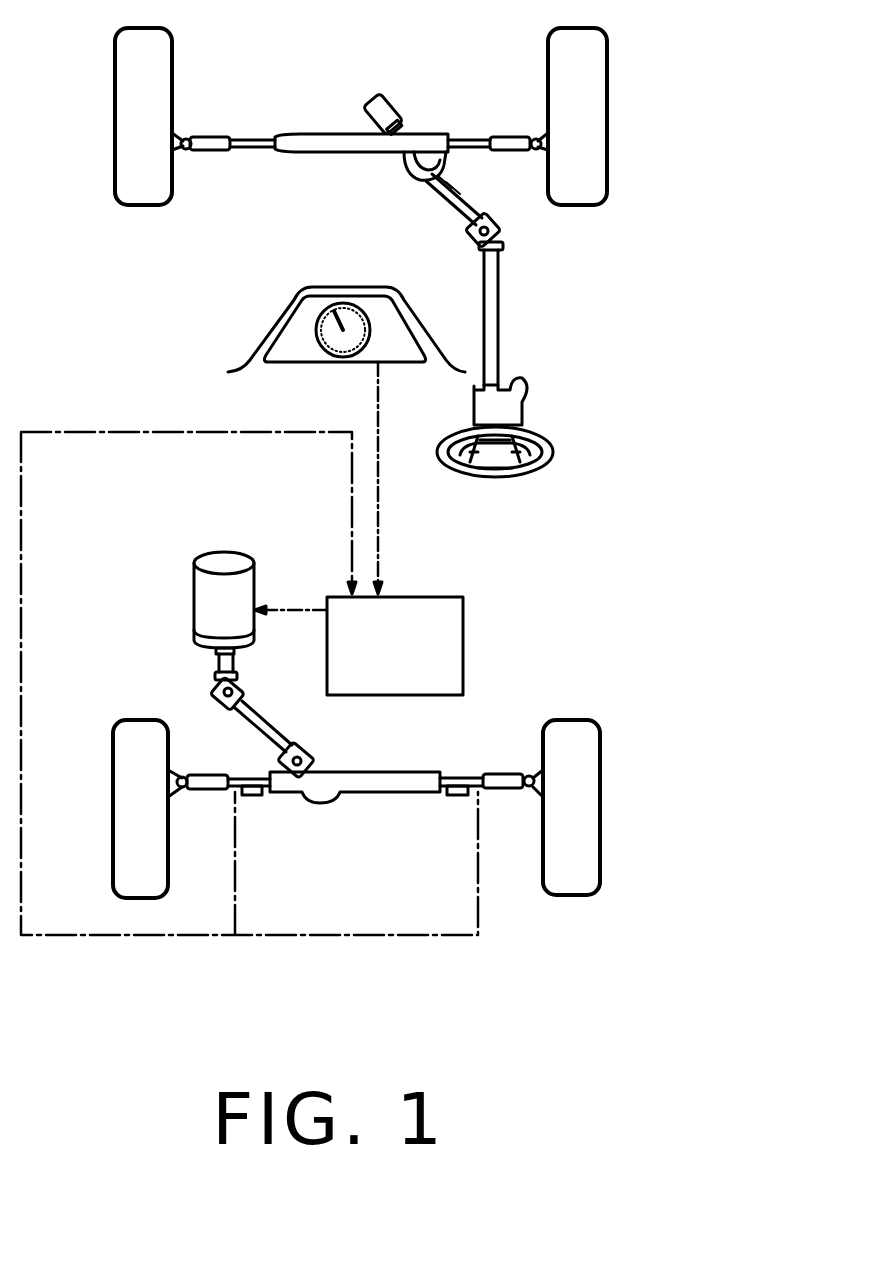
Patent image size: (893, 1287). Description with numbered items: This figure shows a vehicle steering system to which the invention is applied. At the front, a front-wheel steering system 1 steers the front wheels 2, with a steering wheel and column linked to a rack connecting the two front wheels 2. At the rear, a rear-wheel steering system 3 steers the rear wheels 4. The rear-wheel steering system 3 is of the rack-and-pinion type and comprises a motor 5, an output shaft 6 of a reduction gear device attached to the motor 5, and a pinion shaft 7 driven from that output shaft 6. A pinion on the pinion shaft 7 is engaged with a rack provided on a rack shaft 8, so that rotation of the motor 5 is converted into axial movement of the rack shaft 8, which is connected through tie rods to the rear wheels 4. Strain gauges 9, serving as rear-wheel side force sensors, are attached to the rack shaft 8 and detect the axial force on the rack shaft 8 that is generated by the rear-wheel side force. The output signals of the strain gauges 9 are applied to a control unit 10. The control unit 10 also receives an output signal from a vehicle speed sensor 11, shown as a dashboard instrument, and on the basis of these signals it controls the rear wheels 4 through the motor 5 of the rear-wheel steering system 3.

The front-wheel steering system 1 is at (528, 300).
The front wheels 2 is at (163, 80).
The rear-wheel steering system 3 is at (388, 619).
The rear wheels 4 is at (122, 791).
The motor 5 is at (240, 564).
The output shaft 6 is at (218, 660).
The pinion shaft 7 is at (272, 737).
The rack shaft 8 is at (504, 776).
The strain gauges 9 is at (252, 798).
The control unit 10 is at (457, 562).
The vehicle speed sensor 11 is at (405, 323).